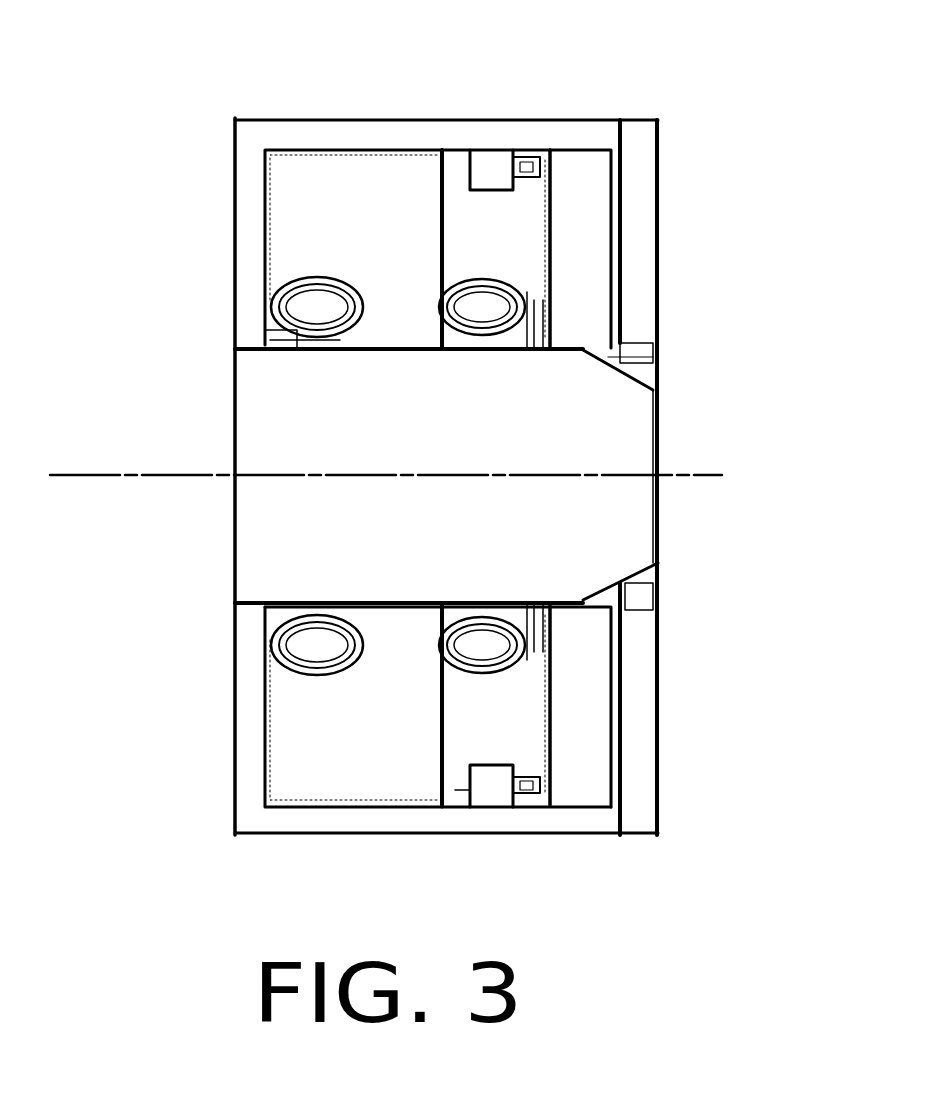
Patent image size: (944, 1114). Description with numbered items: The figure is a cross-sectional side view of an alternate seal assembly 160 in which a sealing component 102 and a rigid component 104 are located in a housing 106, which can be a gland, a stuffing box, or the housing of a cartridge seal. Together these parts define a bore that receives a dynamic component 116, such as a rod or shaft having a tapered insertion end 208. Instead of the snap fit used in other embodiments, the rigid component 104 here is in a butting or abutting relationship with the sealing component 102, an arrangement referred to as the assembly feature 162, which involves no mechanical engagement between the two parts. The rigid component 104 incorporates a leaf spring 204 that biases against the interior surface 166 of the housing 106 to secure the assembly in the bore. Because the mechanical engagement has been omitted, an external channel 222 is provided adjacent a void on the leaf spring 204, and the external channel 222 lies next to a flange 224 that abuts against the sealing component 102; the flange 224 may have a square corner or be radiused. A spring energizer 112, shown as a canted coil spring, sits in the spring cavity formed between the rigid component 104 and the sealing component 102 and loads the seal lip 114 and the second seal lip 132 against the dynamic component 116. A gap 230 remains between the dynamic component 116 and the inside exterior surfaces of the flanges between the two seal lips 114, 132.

The sealing component 102 is at (320, 223).
The rigid component 104 is at (510, 259).
The housing 106 is at (268, 146).
The spring energizer 112 is at (274, 304).
The seal lip 114 is at (497, 602).
The dynamic component 116 is at (593, 546).
The second seal lip 132 is at (297, 603).
The alternate seal assembly 160 is at (708, 108).
The assembly feature 162 is at (437, 178).
The interior surface of the housing 166 is at (573, 802).
The leaf spring 204 is at (527, 158).
The tapered insertion end 208 is at (645, 380).
The external channel 222 is at (492, 786).
The flange 224 is at (463, 790).
The gap 230 is at (340, 348).